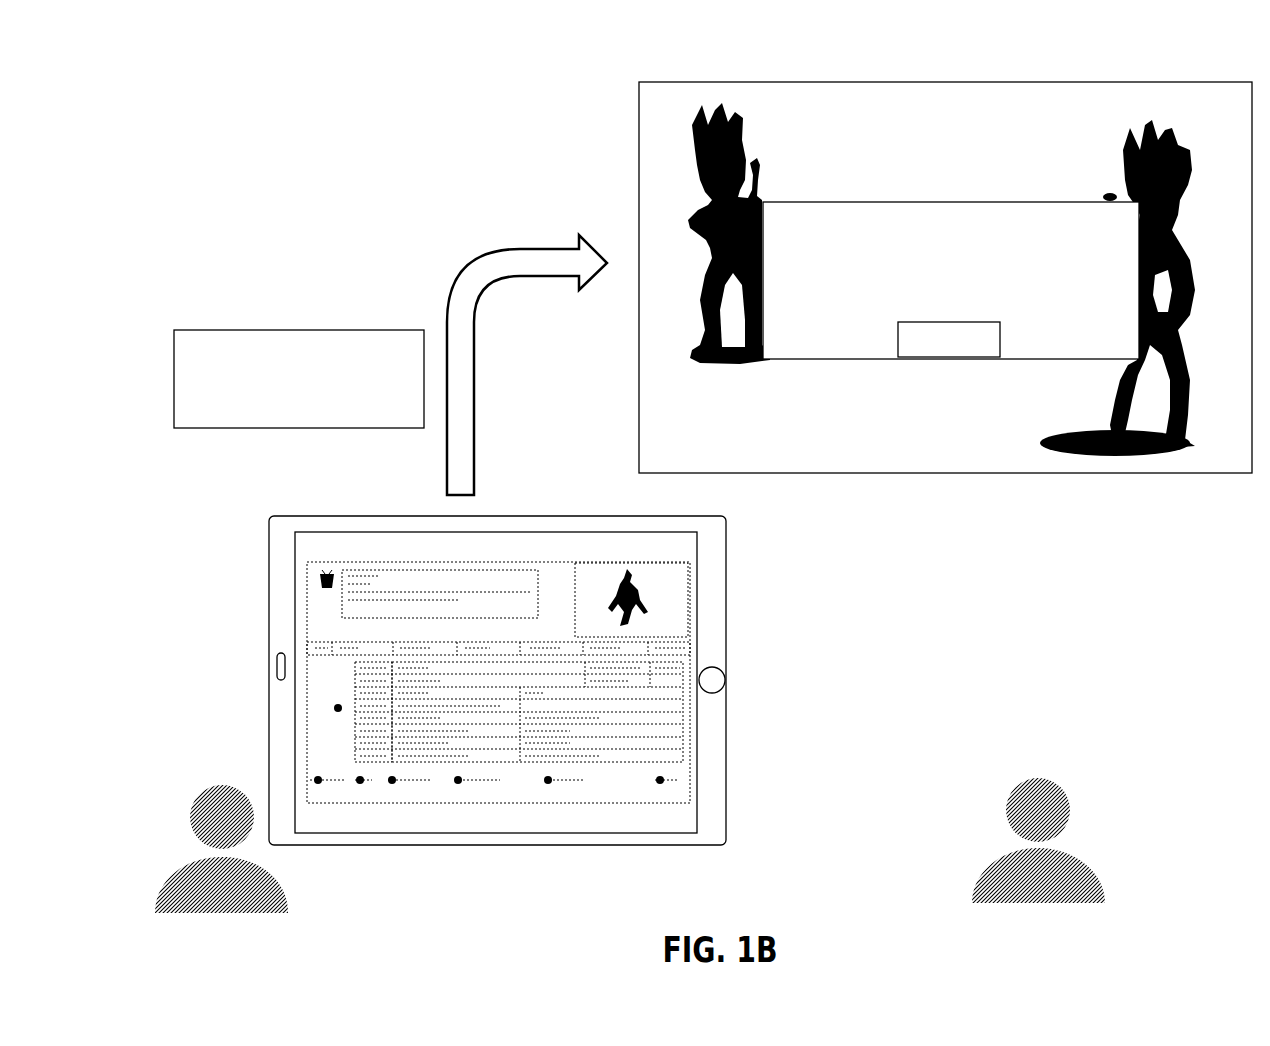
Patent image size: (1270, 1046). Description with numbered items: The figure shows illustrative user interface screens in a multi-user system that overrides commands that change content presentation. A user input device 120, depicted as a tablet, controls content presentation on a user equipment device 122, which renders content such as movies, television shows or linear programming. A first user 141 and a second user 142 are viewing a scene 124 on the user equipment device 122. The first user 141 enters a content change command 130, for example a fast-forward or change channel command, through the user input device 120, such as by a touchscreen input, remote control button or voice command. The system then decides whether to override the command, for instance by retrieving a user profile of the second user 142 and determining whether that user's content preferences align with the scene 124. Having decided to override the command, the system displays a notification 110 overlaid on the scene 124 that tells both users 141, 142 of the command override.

The notification 110 is at (835, 360).
The user input device 120 is at (270, 612).
The user equipment device 122 is at (695, 82).
The scene 124 is at (947, 108).
The content change command 130 is at (213, 329).
The first user 141 is at (285, 896).
The second user 142 is at (1105, 895).